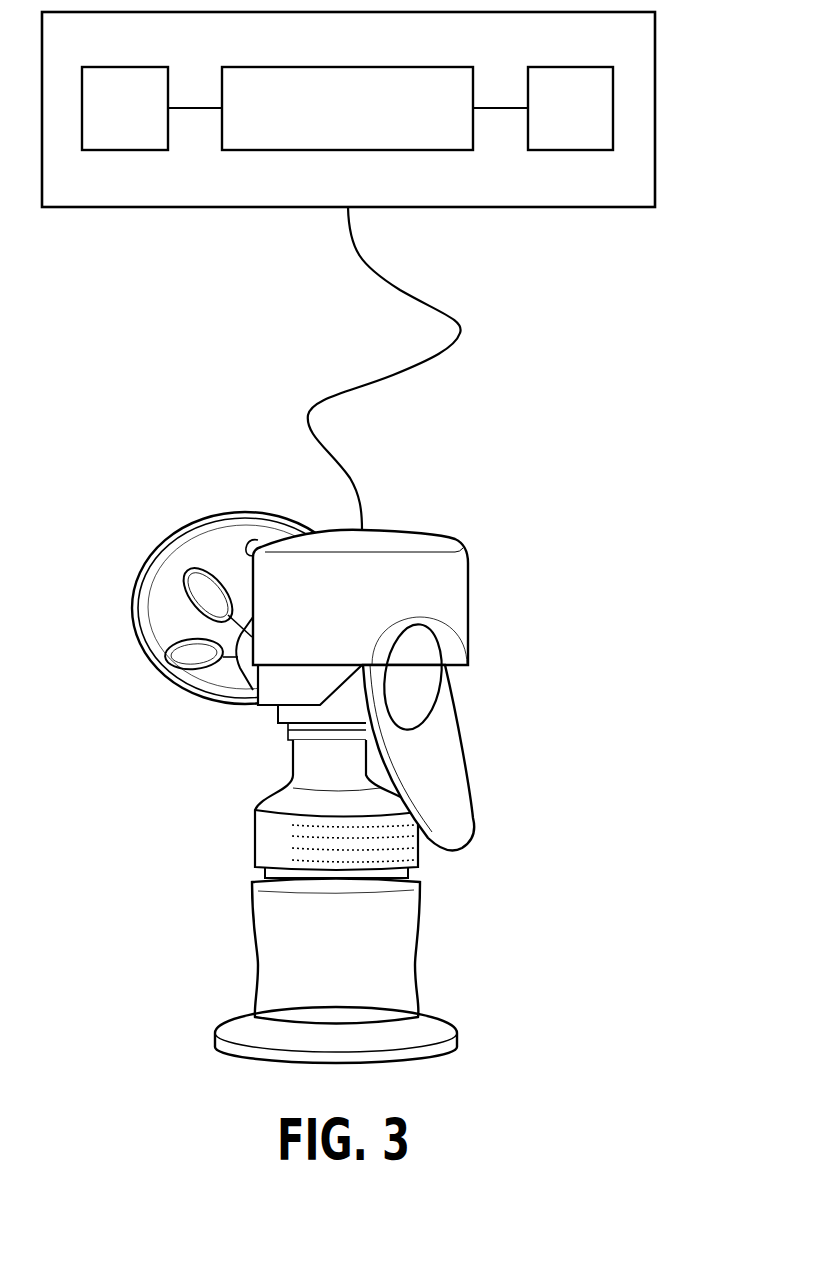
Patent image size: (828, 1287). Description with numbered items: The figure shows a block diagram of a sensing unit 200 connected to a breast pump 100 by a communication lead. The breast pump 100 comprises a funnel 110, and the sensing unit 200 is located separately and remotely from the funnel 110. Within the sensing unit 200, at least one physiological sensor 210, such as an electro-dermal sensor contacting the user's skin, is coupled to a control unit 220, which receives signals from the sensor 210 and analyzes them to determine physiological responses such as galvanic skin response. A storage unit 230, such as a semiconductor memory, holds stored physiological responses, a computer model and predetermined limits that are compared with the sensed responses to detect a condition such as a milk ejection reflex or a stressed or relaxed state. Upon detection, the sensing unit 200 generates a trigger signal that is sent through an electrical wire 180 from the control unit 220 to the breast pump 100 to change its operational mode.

The breast pump 100 is at (357, 739).
The funnel 110 is at (168, 514).
The electrical wire 180 is at (487, 323).
The sensing unit 200 is at (386, 109).
The physiological sensor 210 is at (547, 123).
The control unit 220 is at (326, 123).
The storage unit 230 is at (104, 123).